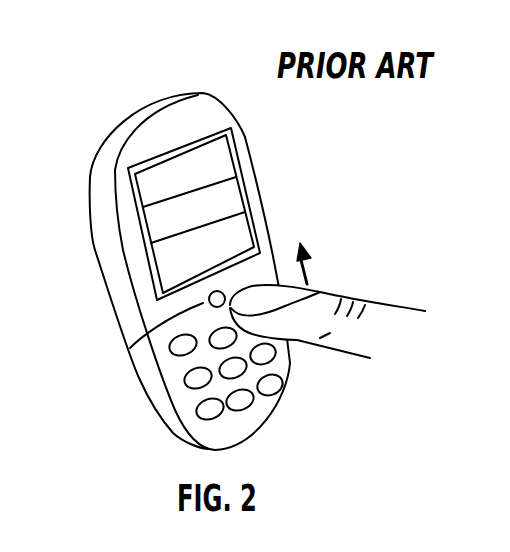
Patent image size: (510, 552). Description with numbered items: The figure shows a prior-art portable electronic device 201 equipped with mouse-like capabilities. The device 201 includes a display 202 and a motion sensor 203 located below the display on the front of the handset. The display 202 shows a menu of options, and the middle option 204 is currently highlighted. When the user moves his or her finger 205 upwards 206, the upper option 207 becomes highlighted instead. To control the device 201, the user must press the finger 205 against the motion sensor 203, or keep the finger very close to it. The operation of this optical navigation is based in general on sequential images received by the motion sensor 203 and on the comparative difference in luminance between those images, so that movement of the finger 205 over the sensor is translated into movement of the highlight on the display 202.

The portable electronic device 201 is at (197, 93).
The display 202 is at (112, 170).
The motion sensor 203 is at (130, 348).
The middle option 204 is at (225, 198).
The finger 205 is at (424, 311).
The upward direction 206 is at (310, 249).
The upper option 207 is at (224, 155).